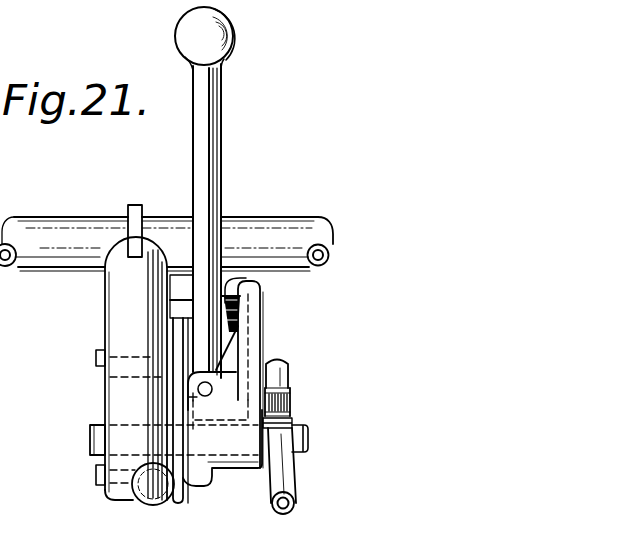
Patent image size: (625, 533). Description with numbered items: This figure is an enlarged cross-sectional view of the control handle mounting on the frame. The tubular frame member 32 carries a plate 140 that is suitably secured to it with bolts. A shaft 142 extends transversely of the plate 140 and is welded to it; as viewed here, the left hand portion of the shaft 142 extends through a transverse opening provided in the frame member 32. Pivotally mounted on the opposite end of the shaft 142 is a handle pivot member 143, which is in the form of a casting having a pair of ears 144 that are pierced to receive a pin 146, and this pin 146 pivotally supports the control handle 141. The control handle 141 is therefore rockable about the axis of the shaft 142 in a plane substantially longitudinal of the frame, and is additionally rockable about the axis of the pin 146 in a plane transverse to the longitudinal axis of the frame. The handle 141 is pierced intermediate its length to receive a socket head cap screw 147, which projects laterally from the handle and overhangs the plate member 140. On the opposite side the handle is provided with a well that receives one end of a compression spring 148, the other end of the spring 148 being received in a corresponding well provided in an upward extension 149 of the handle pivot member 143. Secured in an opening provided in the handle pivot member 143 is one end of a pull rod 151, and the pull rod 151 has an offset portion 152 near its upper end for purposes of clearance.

The control handle 141 is at (222, 205).
The socket head cap screw 147 is at (175, 308).
The compression spring 148 is at (246, 278).
The upward extension 149 is at (260, 315).
The handle pivot member 143 is at (263, 344).
The pin 146 is at (212, 385).
The ears 144 is at (198, 397).
The plate 140 is at (196, 482).
The offset portion 152 is at (290, 368).
The pull rod 151 is at (294, 478).
The shaft 142 is at (90, 443).
The tubular member 32 is at (106, 492).